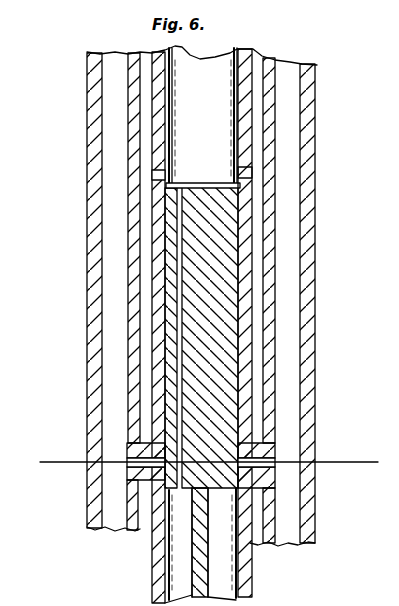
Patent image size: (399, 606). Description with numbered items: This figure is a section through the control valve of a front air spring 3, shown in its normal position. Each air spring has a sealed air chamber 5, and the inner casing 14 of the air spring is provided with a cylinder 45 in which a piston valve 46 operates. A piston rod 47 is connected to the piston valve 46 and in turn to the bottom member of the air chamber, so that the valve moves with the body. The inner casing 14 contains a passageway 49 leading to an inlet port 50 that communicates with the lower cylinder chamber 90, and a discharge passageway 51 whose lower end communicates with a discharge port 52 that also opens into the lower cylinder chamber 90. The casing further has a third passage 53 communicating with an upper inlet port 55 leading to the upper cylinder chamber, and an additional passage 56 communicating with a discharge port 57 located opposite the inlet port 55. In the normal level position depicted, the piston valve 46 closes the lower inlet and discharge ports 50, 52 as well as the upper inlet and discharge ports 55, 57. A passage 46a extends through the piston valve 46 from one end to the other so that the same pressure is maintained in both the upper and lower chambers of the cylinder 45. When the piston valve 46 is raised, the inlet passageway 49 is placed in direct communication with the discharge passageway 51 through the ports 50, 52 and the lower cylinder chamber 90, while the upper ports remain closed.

The front air spring 3 is at (88, 206).
The inner casing 14 is at (100, 272).
The passageway 49 is at (128, 346).
The third passage 53 is at (150, 384).
The upper inlet port 55 is at (157, 174).
The piston valve 46 is at (212, 213).
The passage 46a is at (180, 186).
The discharge port 57 is at (240, 172).
The discharge passageway 51 is at (288, 200).
The additional passage 56 is at (257, 228).
The cylinder 45 is at (243, 349).
The discharge port 52 is at (264, 456).
The inlet port 50 is at (130, 466).
The sealed air chamber 5 is at (206, 463).
The lower cylinder chamber 90 is at (182, 529).
The piston rod 47 is at (198, 553).